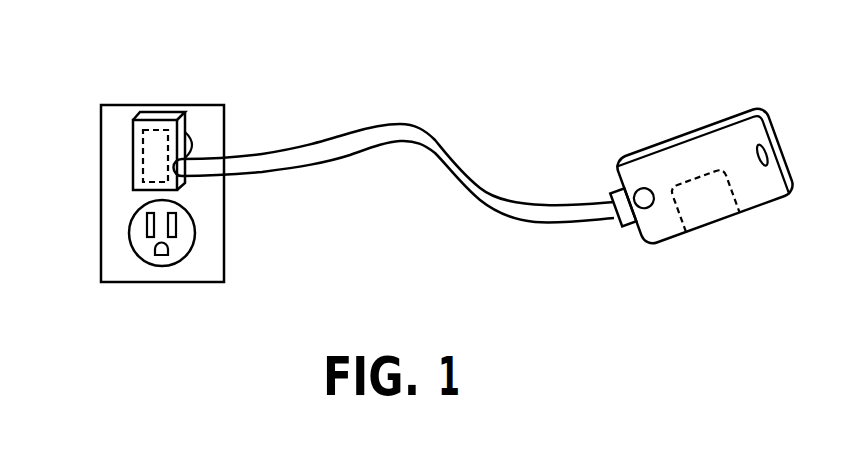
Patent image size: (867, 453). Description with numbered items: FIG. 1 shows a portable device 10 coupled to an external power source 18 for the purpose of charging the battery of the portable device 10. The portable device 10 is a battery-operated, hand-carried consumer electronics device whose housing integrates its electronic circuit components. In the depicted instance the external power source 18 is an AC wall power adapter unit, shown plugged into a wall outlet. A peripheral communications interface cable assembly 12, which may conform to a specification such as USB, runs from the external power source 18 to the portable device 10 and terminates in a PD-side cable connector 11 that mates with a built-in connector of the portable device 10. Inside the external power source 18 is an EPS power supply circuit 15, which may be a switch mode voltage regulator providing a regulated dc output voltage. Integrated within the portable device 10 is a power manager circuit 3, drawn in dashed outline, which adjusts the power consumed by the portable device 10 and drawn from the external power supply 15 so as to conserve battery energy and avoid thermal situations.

The portable device 10 is at (762, 98).
The power manager circuit 3 is at (700, 213).
The PD-side cable connector 11 is at (628, 226).
The peripheral communications interface cable assembly 12 is at (480, 198).
The EPS power supply circuit 15 is at (148, 150).
The external power source 18 is at (160, 118).